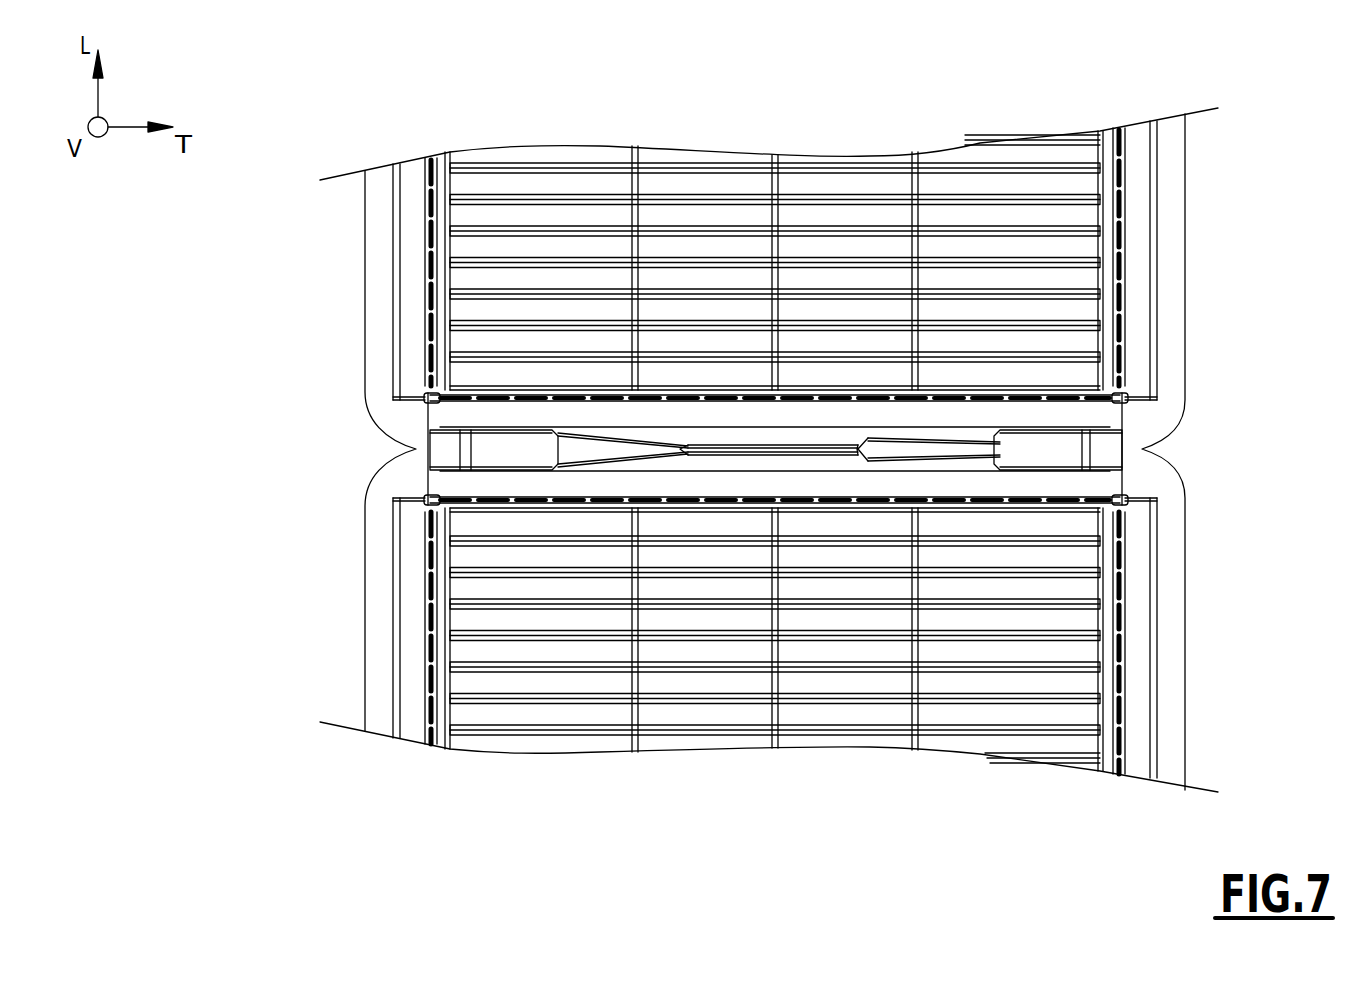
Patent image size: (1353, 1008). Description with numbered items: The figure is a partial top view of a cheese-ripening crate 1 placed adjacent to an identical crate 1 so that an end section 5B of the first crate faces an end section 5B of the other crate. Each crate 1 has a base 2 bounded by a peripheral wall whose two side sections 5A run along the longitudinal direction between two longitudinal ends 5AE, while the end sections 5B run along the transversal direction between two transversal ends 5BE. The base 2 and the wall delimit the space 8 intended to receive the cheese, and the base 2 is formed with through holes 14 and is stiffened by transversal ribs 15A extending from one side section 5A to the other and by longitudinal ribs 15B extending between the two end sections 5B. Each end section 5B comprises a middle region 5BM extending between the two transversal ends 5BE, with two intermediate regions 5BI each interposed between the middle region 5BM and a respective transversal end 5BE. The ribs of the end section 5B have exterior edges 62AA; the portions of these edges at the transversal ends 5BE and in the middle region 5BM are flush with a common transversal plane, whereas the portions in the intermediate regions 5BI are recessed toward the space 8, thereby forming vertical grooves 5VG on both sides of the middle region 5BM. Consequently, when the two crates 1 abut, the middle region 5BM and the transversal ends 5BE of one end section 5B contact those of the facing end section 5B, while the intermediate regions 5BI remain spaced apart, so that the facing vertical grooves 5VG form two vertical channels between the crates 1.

The crate 1 is at (205, 283).
The base 2 is at (604, 152).
The side section 5A is at (383, 282).
The longitudinal end 5AE is at (415, 402).
The end section 5B is at (995, 409).
The transversal end 5BE is at (425, 447).
The intermediate region 5BI is at (577, 418).
The middle region 5BM is at (837, 437).
The vertical groove 5VG is at (585, 439).
The space intended to receive the cheese 8 is at (958, 243).
The through hole 14 is at (832, 622).
The transversal rib 15A is at (515, 168).
The longitudinal rib 15B is at (775, 190).
The exterior edge 62AA is at (485, 457).